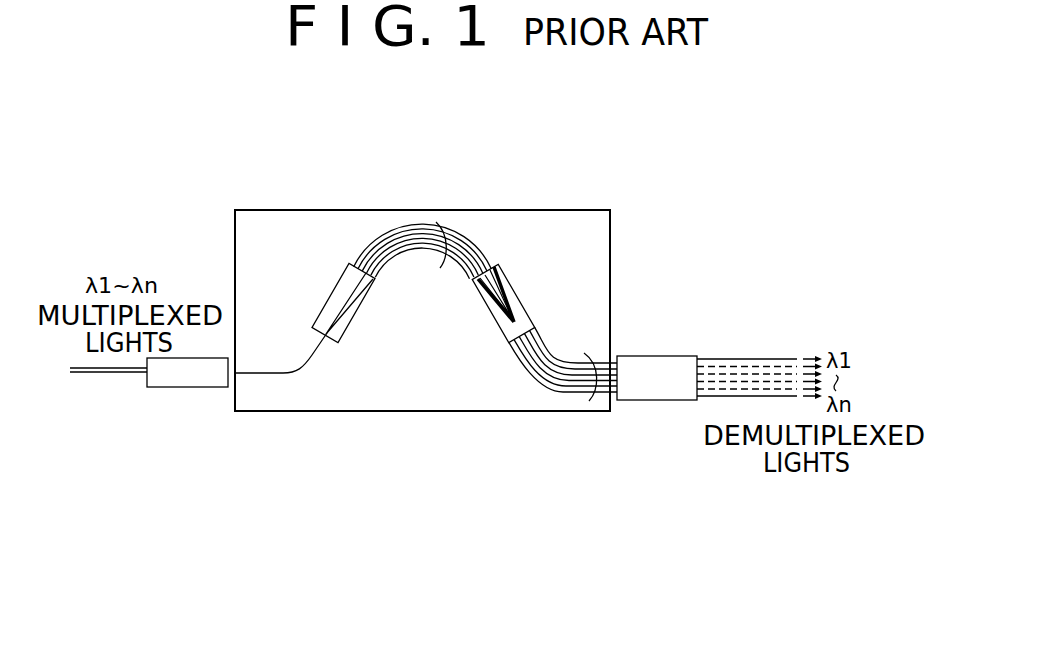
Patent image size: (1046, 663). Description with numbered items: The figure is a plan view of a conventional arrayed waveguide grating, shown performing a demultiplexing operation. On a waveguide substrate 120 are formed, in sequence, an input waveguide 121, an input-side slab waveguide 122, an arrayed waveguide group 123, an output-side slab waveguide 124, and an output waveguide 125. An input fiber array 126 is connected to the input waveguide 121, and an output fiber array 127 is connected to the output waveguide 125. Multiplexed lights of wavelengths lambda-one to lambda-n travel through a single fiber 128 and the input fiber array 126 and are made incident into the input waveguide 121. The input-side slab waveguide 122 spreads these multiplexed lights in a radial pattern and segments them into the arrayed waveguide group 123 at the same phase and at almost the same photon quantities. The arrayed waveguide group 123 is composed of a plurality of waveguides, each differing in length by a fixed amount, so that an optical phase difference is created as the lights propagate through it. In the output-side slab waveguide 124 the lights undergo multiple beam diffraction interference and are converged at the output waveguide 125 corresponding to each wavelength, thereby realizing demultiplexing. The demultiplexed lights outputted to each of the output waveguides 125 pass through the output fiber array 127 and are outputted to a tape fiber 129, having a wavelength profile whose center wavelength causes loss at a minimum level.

The waveguide substrate 120 is at (562, 223).
The input waveguide 121 is at (263, 385).
The input-side slab waveguide 122 is at (330, 298).
The arrayed waveguide group 123 is at (440, 223).
The output-side slab waveguide 124 is at (520, 297).
The output waveguide 125 is at (587, 352).
The input fiber array 126 is at (187, 382).
The output fiber array 127 is at (655, 398).
The single fiber 128 is at (108, 373).
The tape fiber 129 is at (748, 358).